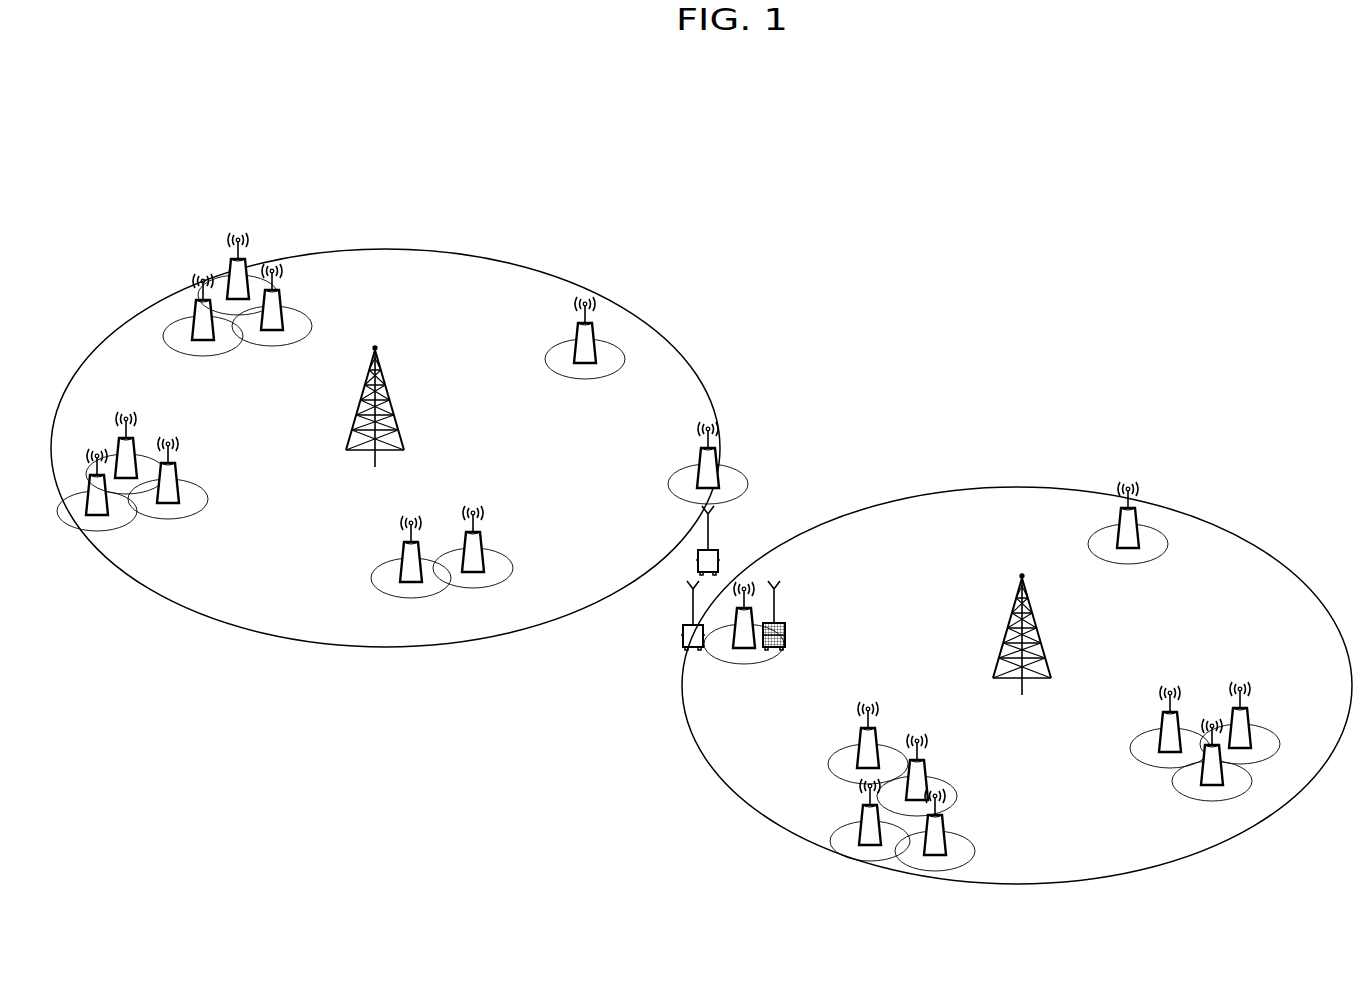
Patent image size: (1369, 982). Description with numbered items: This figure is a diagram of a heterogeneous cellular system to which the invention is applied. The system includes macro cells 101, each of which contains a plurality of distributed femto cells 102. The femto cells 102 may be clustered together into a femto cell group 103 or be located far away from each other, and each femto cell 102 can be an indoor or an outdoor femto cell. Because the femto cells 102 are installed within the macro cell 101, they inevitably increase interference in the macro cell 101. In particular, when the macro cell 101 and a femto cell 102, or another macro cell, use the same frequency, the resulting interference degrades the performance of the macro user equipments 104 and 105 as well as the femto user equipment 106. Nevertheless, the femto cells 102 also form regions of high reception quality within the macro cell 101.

The macro cell 101 is at (398, 372).
The femto cell 102 is at (727, 402).
The femto cell group 103 is at (99, 515).
The macro user equipment 104 is at (728, 548).
The macro user equipment 105 is at (680, 652).
The femto user equipment 106 is at (768, 668).